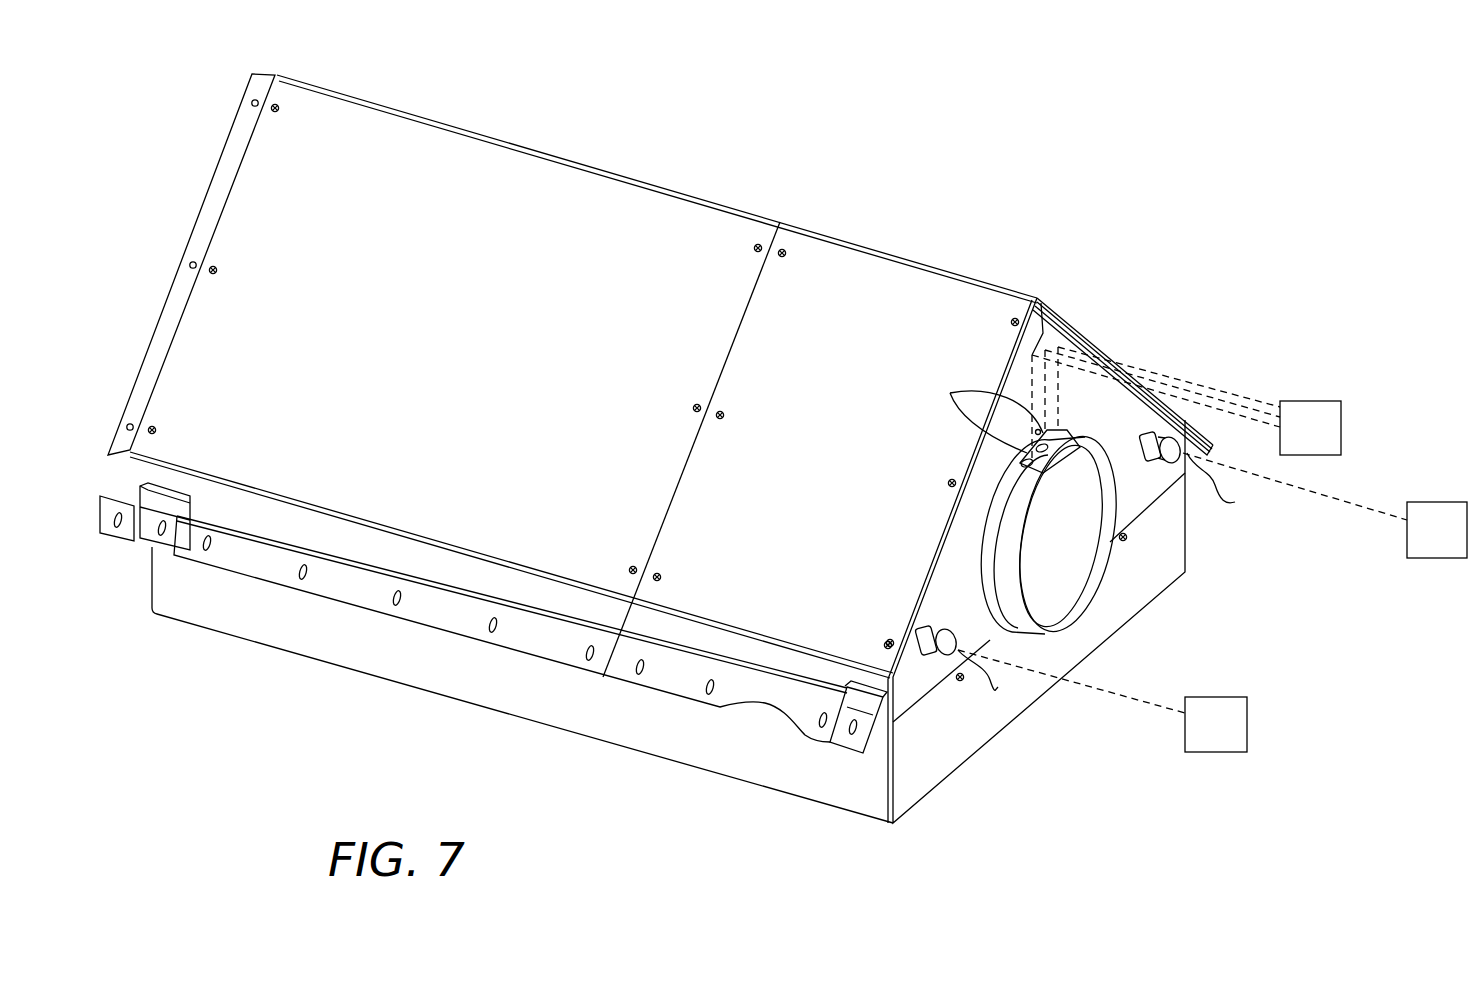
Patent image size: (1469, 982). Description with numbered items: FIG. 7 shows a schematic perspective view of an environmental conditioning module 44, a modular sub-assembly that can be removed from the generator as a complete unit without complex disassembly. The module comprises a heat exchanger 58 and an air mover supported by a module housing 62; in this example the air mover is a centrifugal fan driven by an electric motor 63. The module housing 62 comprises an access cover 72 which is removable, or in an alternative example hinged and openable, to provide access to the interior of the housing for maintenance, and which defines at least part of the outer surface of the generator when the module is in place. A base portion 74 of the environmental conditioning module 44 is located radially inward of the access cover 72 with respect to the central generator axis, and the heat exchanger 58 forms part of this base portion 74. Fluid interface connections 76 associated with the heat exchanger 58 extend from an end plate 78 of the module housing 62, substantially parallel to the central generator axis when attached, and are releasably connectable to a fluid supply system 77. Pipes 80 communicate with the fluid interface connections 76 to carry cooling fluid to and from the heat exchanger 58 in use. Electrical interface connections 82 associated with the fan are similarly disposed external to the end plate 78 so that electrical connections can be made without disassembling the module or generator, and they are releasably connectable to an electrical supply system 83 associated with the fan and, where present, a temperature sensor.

The environmental conditioning module 44 is at (716, 120).
The heat exchanger 58 is at (393, 686).
The module housing 62 is at (1108, 351).
The electric motor 63 is at (1055, 560).
The access cover 72 is at (572, 376).
The base portion 74 is at (945, 744).
The fluid interface connections 76 is at (1231, 488).
The fluid supply system 77 is at (1212, 602).
The end plate 78 is at (1060, 343).
The pipes 80 is at (1147, 438).
The electrical interface connections 82 is at (950, 393).
The electrical supply system 83 is at (1186, 403).